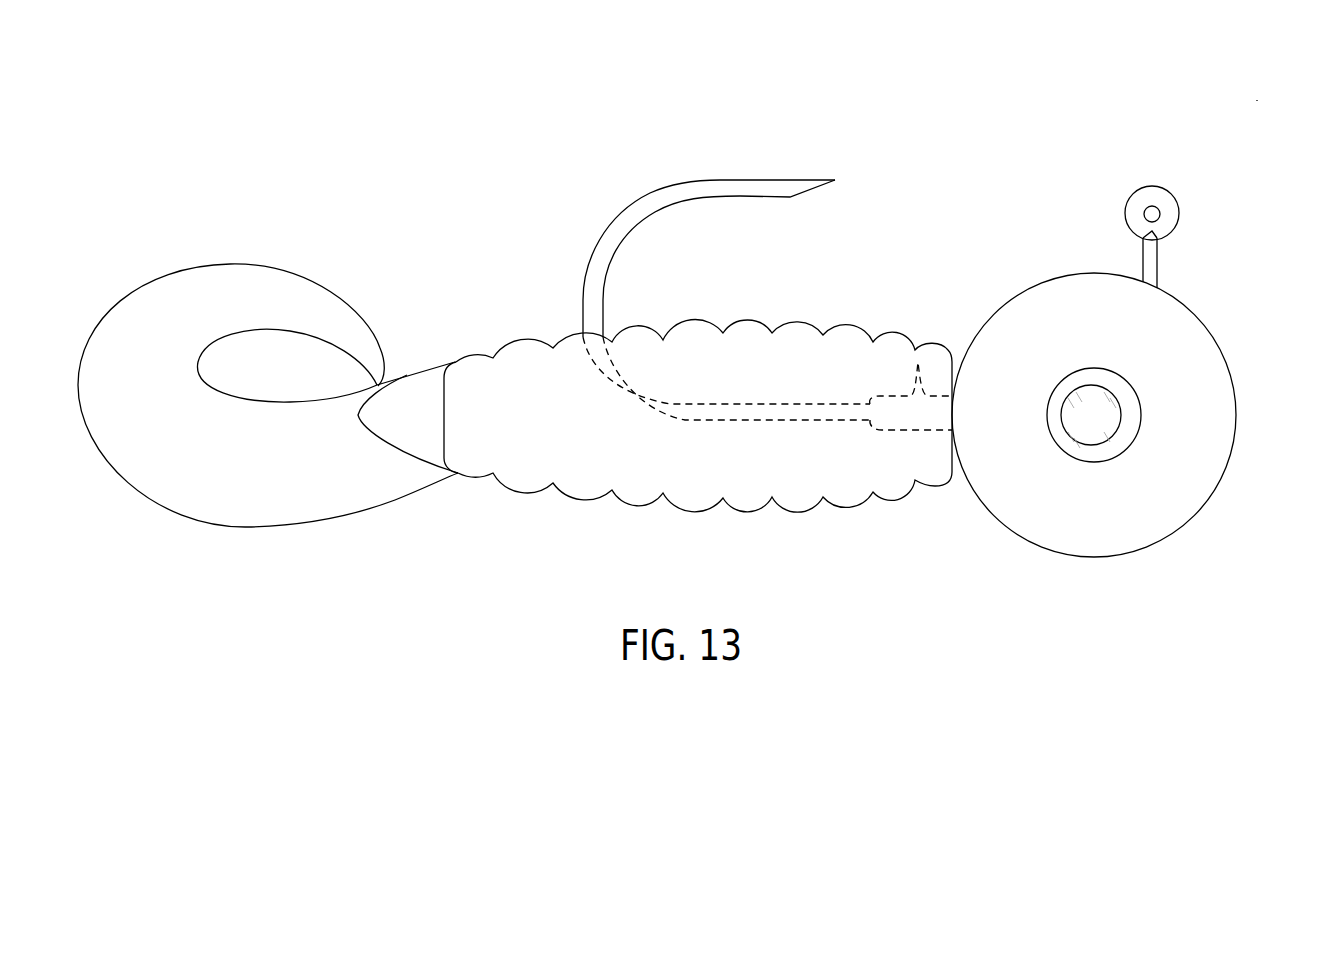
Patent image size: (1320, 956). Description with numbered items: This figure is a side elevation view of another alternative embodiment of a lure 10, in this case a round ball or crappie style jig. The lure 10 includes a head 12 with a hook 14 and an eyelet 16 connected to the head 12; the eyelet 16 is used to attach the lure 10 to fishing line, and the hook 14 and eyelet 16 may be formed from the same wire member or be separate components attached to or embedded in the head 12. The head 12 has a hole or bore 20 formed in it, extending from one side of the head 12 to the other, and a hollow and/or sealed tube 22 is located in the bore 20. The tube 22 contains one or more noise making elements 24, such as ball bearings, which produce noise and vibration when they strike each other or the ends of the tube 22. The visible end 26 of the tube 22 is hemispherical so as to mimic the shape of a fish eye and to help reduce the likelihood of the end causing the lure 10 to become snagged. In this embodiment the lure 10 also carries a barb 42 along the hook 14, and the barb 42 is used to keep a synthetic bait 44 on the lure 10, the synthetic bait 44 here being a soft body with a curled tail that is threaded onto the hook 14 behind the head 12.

The lure 10 is at (1202, 144).
The head 12 is at (1197, 513).
The hook 14 is at (748, 180).
The eyelet 16 is at (1180, 213).
The bore 20 is at (1120, 381).
The tube 22 is at (1127, 402).
The noise making elements 24 is at (1088, 438).
The end of the tube 26 is at (1132, 420).
The barb 42 is at (920, 352).
The synthetic bait 44 is at (680, 510).